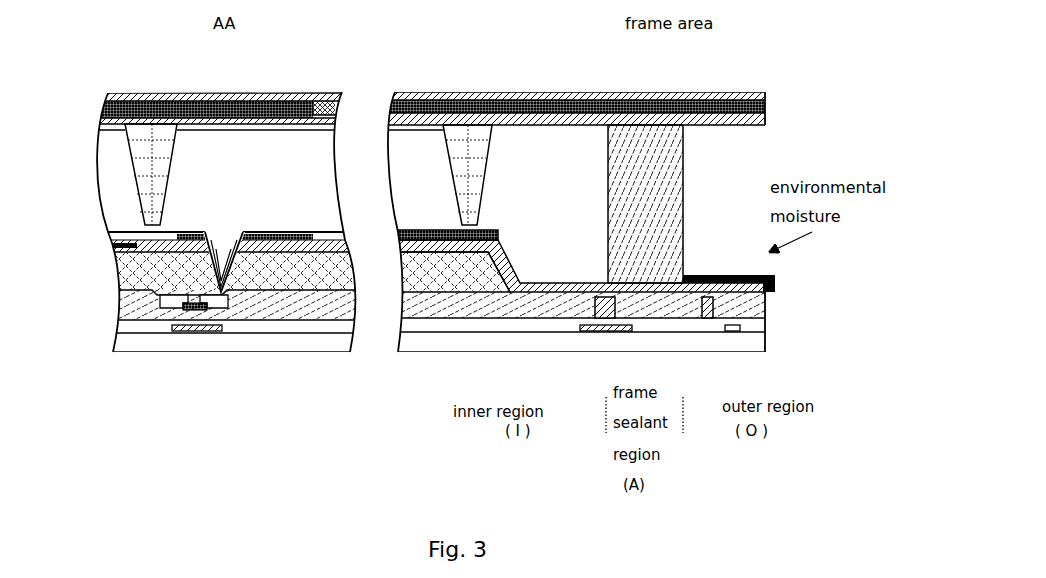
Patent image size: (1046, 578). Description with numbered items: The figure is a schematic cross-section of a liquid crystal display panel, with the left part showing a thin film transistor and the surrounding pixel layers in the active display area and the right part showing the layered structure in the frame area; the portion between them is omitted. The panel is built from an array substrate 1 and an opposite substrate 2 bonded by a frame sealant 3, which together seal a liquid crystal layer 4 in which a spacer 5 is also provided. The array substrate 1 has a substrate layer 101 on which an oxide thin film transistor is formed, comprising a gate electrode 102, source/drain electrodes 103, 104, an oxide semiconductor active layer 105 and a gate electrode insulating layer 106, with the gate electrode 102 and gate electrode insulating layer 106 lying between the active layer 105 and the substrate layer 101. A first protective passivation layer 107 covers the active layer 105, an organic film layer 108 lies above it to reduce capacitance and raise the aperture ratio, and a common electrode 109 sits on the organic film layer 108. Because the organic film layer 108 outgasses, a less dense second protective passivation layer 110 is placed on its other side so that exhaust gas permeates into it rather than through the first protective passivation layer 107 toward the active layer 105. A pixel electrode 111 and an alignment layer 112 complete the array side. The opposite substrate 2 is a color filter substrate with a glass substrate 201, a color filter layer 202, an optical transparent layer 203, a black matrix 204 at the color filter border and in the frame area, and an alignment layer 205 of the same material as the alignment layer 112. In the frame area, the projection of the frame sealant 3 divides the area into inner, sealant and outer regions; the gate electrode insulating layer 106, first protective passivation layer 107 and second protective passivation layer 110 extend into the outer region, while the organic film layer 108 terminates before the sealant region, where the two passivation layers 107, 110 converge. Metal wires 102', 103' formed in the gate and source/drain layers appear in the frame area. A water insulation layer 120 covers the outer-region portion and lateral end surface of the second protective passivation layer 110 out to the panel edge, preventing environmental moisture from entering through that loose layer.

The array substrate 1 is at (777, 308).
The opposite substrate 2 is at (837, 80).
The frame sealant 3 is at (673, 256).
The liquid crystal layer 4 is at (227, 160).
The spacer 5 is at (148, 147).
The substrate layer 101 is at (170, 343).
The gate electrode 102 is at (204, 348).
The metal wire 102' is at (618, 339).
The source/drain electrode 103 is at (148, 341).
The metal wire 103' is at (660, 339).
The source/drain electrode 104 is at (227, 309).
The active layer 105 is at (187, 331).
The gate electrode insulating layer 106 is at (112, 343).
The first protective passivation layer 107 is at (137, 297).
The organic film layer 108 is at (137, 278).
The common electrode 109 is at (115, 252).
The second protective passivation layer 110 is at (113, 244).
The pixel electrode 111 is at (295, 235).
The alignment layer 112 is at (112, 233).
The water insulation layer 120 is at (777, 282).
The glass substrate 201 is at (183, 93).
The color filter layer 202 is at (107, 107).
The optical transparent layer 203 is at (100, 120).
The black matrix 204 is at (330, 100).
The alignment layer 205 is at (98, 128).